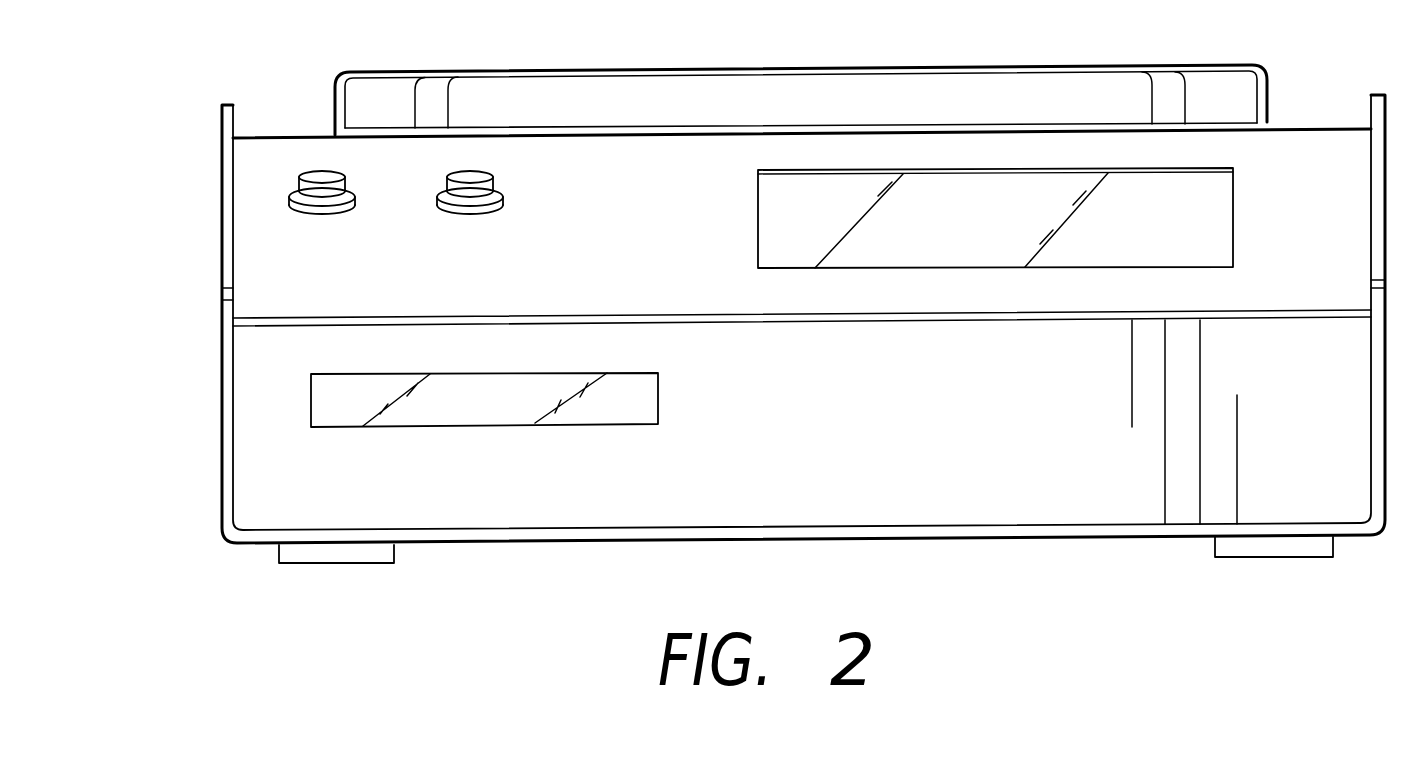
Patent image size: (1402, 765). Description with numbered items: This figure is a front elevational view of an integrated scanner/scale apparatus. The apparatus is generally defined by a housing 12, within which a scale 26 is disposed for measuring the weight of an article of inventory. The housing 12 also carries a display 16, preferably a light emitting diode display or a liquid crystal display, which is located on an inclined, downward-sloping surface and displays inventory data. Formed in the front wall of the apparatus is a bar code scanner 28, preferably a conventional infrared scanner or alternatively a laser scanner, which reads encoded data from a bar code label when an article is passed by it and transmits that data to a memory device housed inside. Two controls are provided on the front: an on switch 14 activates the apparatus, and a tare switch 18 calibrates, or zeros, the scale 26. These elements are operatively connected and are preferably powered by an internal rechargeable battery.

The housing 12 is at (233, 273).
The on switch 14 is at (328, 216).
The display 16 is at (1233, 213).
The tare switch 18 is at (475, 216).
The scale 26 is at (552, 72).
The bar code scanner 28 is at (311, 395).